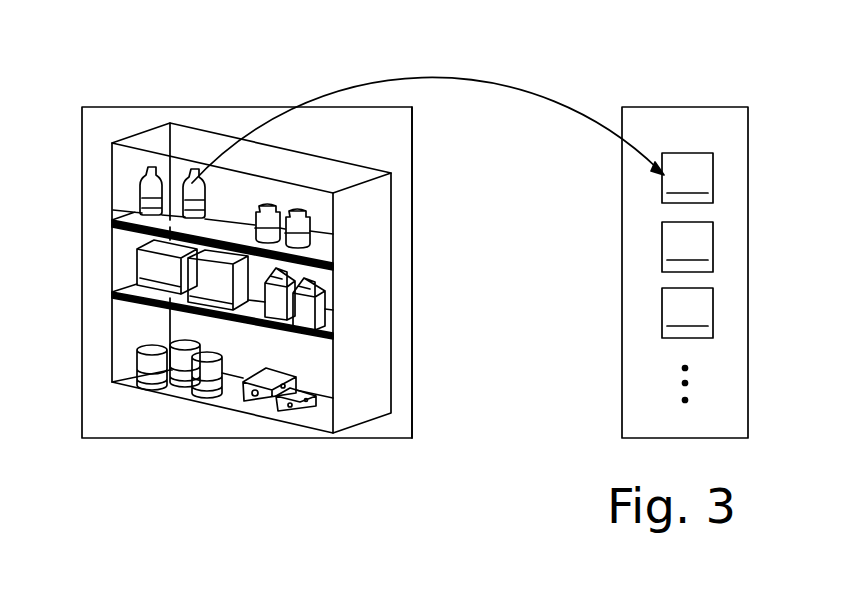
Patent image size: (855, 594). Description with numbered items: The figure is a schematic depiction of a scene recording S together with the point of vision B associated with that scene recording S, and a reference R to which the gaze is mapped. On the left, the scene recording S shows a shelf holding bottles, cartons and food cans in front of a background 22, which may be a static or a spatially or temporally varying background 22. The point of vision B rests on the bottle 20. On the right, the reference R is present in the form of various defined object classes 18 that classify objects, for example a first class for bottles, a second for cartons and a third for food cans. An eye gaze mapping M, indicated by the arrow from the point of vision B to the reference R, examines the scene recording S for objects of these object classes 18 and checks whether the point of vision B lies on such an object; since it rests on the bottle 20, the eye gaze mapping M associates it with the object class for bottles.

The scene recording S is at (115, 107).
The point of vision B is at (191, 180).
The eye gaze mapping M is at (450, 78).
The background 22 is at (395, 145).
The bottle 20 is at (112, 207).
The object classes 18 is at (663, 129).
The reference R is at (740, 107).